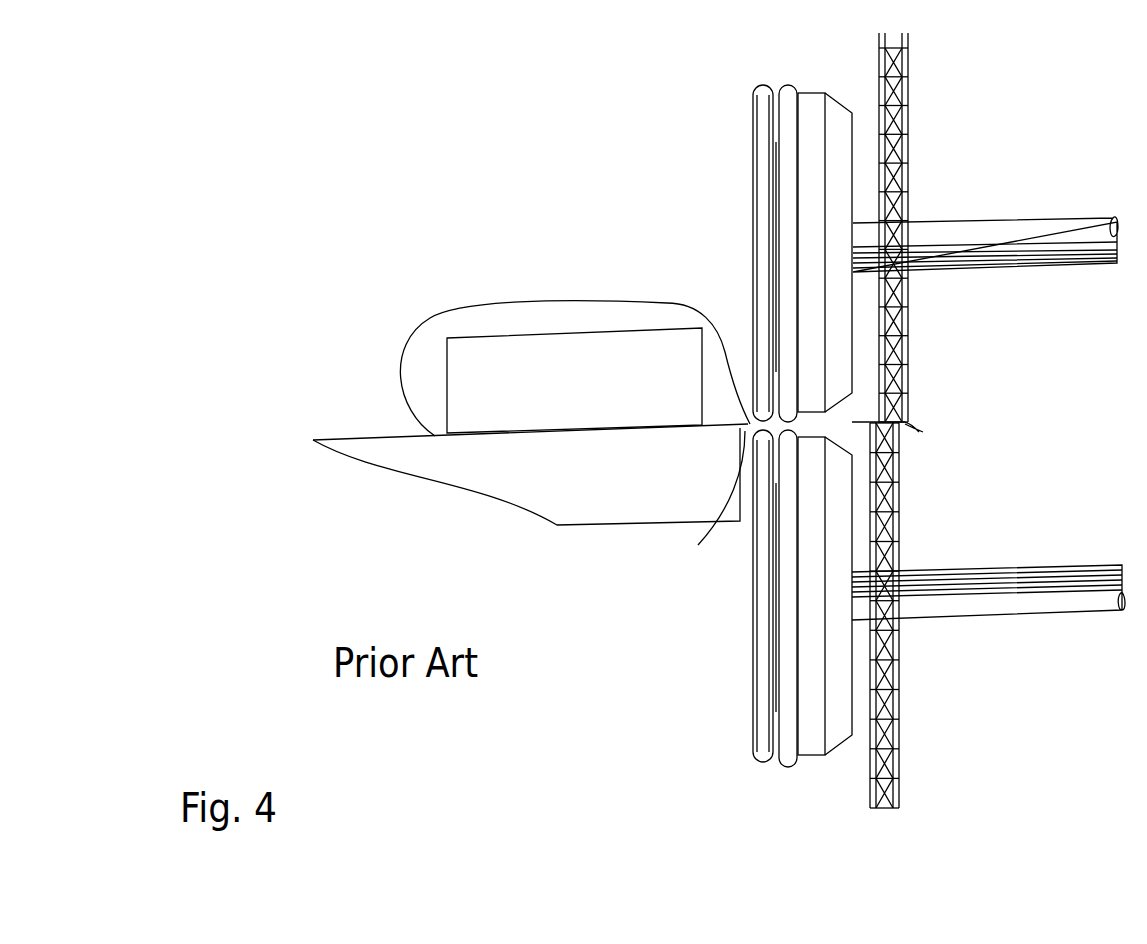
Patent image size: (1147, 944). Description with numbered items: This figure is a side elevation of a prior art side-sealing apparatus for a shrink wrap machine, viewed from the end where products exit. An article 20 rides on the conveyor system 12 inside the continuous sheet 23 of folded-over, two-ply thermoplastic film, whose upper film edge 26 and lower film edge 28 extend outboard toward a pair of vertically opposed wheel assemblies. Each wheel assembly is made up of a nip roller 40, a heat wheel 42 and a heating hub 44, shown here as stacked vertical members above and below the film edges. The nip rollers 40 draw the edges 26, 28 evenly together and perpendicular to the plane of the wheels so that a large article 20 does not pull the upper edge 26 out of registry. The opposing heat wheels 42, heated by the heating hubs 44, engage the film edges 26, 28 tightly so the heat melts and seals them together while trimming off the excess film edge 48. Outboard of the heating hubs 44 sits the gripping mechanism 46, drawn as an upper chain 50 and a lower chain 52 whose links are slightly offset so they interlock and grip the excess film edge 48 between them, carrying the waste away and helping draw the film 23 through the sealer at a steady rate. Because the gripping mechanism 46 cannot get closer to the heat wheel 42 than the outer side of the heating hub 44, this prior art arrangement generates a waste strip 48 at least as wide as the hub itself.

The conveyor system 12 is at (520, 482).
The article 20 is at (578, 332).
The continuous sheet of folded-over two-ply film 23 is at (448, 312).
The upper film edge 26 is at (728, 353).
The film edge 28 is at (704, 505).
The nip roller 40 is at (763, 87).
The heat wheel 42 is at (788, 85).
The heating hub 44 is at (815, 92).
The gripping mechanism 46 is at (975, 157).
The excess film edge 48 is at (853, 421).
The upper chain 50 is at (898, 73).
The lower chain 52 is at (897, 758).